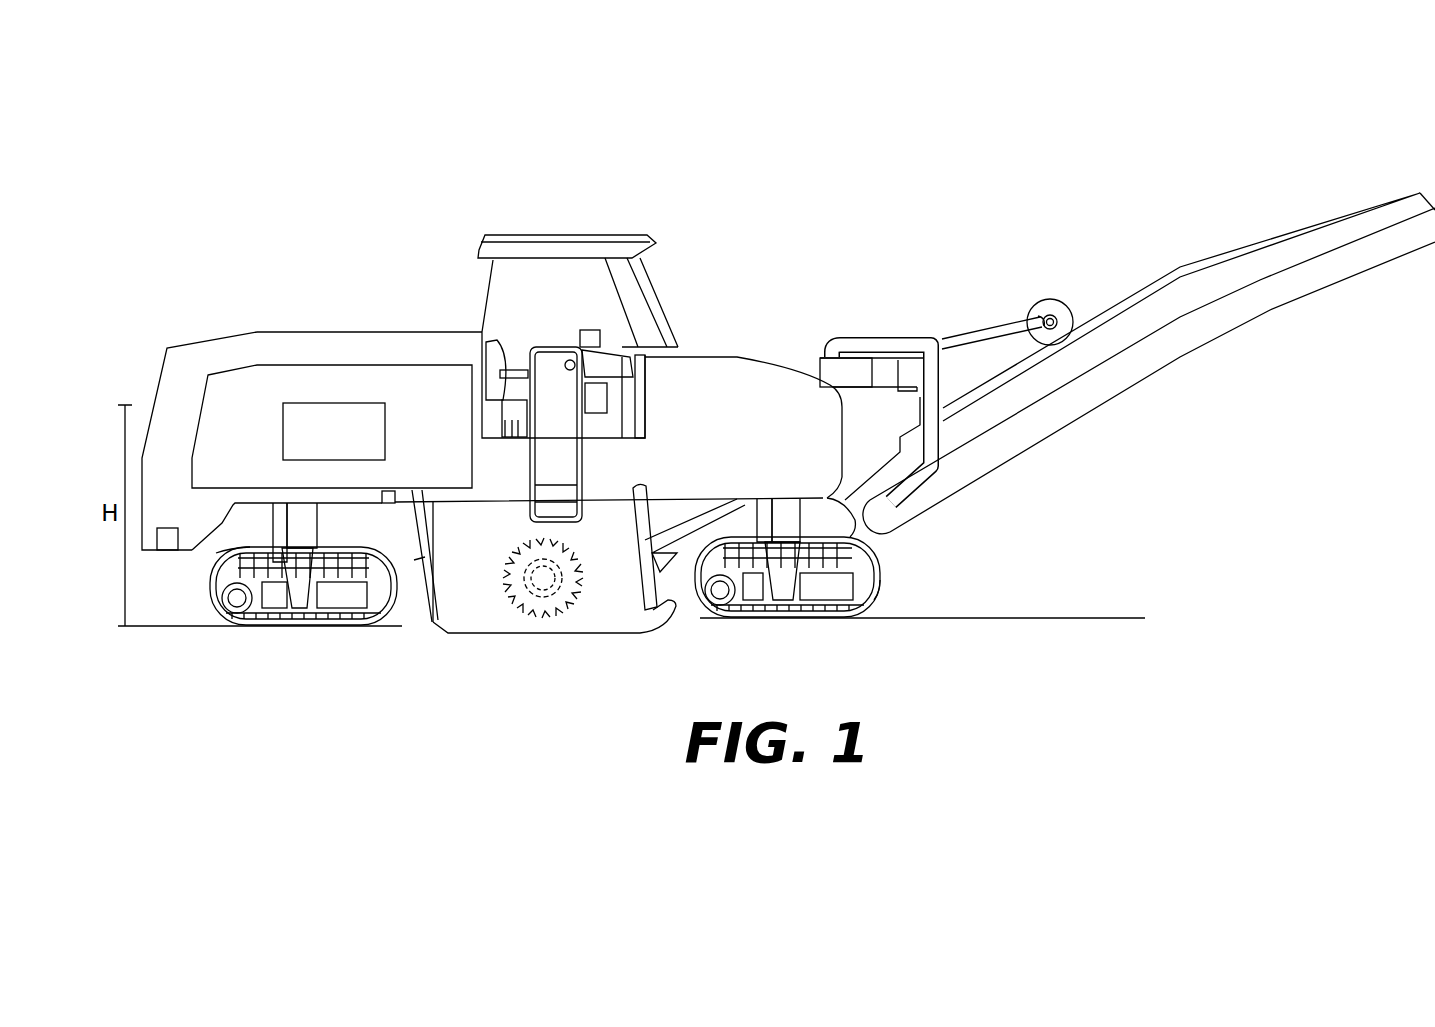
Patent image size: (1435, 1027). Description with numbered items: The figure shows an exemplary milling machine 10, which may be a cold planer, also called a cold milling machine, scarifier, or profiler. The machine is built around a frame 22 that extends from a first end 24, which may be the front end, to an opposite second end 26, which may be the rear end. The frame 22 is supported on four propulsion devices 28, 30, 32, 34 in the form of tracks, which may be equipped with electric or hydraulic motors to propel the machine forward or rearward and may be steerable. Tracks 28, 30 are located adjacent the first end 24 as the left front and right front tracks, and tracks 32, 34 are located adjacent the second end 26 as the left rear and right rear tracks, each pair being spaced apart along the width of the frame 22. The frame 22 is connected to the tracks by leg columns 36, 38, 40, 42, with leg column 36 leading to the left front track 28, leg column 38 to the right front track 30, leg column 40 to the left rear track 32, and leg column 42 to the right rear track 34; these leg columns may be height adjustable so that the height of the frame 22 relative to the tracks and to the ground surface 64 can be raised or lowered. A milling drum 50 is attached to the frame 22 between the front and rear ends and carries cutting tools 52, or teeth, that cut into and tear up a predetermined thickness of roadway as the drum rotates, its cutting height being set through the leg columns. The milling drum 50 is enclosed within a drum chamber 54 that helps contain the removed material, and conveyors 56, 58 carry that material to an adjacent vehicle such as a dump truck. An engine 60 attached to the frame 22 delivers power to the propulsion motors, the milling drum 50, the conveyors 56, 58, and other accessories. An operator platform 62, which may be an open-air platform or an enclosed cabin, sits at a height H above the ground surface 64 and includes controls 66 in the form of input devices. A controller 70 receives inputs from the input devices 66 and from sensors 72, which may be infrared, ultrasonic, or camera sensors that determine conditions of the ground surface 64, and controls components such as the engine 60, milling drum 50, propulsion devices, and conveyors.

The milling machine 10 is at (672, 152).
The frame 22 is at (237, 495).
The first end 24 is at (946, 512).
The second end 26 is at (140, 390).
The propulsion device 28 is at (877, 550).
The propulsion device 30 is at (880, 600).
The propulsion device 32 is at (215, 563).
The propulsion device 34 is at (210, 603).
The leg column 36 is at (763, 515).
The leg column 38 is at (793, 523).
The leg column 40 is at (273, 524).
The leg column 42 is at (313, 538).
The milling drum 50 is at (543, 603).
The cutting tools 52 is at (582, 553).
The drum chamber 54 is at (457, 613).
The conveyor 56 is at (682, 518).
The conveyor 58 is at (1155, 357).
The engine 60 is at (325, 445).
The operator platform 62 is at (478, 298).
The ground surface 64 is at (133, 627).
The controls 66 is at (603, 337).
The controller 70 is at (607, 403).
The sensor 72 is at (402, 498).